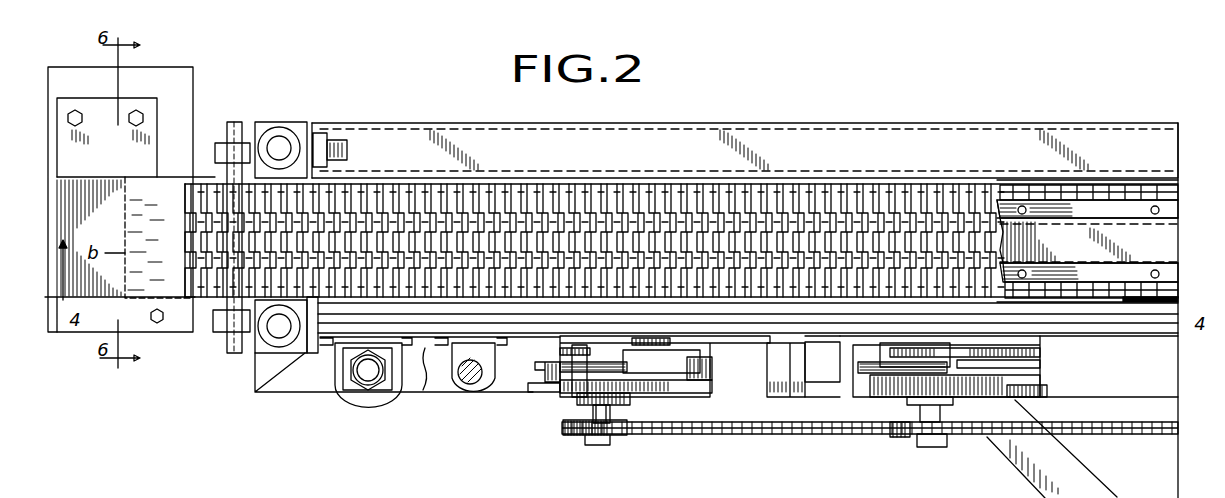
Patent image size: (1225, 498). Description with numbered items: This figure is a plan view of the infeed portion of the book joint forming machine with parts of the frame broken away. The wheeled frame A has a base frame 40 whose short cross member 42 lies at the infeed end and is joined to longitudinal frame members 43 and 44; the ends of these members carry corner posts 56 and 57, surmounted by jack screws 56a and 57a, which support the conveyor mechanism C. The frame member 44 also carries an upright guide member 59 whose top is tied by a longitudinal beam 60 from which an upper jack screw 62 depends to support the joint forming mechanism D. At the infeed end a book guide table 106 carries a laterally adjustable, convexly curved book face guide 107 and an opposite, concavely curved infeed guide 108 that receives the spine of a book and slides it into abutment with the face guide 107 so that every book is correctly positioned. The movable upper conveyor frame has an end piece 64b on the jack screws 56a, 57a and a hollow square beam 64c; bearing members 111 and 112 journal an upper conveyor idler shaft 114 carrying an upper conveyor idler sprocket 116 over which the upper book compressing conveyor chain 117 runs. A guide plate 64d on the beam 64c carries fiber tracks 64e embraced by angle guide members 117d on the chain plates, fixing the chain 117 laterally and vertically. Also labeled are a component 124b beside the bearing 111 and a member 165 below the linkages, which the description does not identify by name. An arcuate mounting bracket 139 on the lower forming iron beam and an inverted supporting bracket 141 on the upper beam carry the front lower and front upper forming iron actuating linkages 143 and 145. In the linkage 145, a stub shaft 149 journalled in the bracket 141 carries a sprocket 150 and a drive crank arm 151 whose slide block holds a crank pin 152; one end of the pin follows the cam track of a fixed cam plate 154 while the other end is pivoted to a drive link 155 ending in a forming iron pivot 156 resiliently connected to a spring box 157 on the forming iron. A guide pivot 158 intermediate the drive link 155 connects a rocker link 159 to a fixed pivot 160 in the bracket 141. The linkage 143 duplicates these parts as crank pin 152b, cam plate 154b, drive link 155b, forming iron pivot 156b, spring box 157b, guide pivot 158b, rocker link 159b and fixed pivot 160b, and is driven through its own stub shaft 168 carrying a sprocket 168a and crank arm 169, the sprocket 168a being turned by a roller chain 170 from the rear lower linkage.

The base frame 40 is at (852, 124).
The longitudinal frame member 43 is at (922, 128).
The short cross member 42 is at (255, 395).
The longitudinal frame member 44 is at (300, 392).
The corner post 56 is at (268, 128).
The jack screw 56a is at (281, 145).
The corner post 57 is at (292, 348).
The jack screw 57a is at (276, 326).
The upright guide member 59 is at (370, 407).
The longitudinal beam 60 is at (413, 385).
The upper jack screw 62 is at (468, 384).
The end piece 64b is at (340, 165).
The hollow square beam 64c is at (1170, 232).
The guide plate 64d is at (1190, 270).
The fiber tracks 64e is at (1190, 286).
The book guide table 106 is at (185, 80).
The book face guide 107 is at (82, 103).
The infeed guide 108 is at (88, 332).
The bearing member 111 is at (215, 152).
The bearing member 112 is at (215, 332).
The upper conveyor idler shaft 114 is at (235, 122).
The upper conveyor idler sprocket 116 is at (188, 258).
The upper book compressing conveyor chain 117 is at (188, 200).
The angle guide members 117d is at (1192, 299).
The spacer block 124b is at (322, 133).
The arcuate mounting bracket 139 is at (1112, 397).
The arcuate supporting bracket 141 is at (773, 395).
The front lower forming iron actuating linkage 143 is at (1040, 358).
The front upper forming iron actuating linkage 145 is at (722, 371).
The stub shaft 149 is at (590, 412).
The sprocket 150 is at (577, 437).
The drive crank arm 151 is at (520, 378).
The crank pin 152 is at (558, 347).
The crank pin 152b is at (848, 352).
The fixed cam plate 154 is at (530, 385).
The fixed cam plate 154b is at (907, 383).
The drive link 155 is at (622, 395).
The drive link 155b is at (998, 385).
The forming iron pivot 156 is at (700, 356).
The forming iron pivot 156b is at (1035, 349).
The spring box 157 is at (708, 343).
The spring box 157b is at (1037, 333).
The guide pivot 158 is at (670, 396).
The guide pivot 158b is at (970, 425).
The rocker link 159 is at (660, 350).
The rocker link 159b is at (1040, 366).
The fixed pivot 160 is at (700, 395).
The fixed pivot 160b is at (1013, 398).
The drive chain 165 is at (762, 434).
The stub shaft 168 is at (930, 450).
The sprocket 168a is at (905, 437).
The crank arm 169 is at (840, 397).
The roller chain 170 is at (1085, 437).